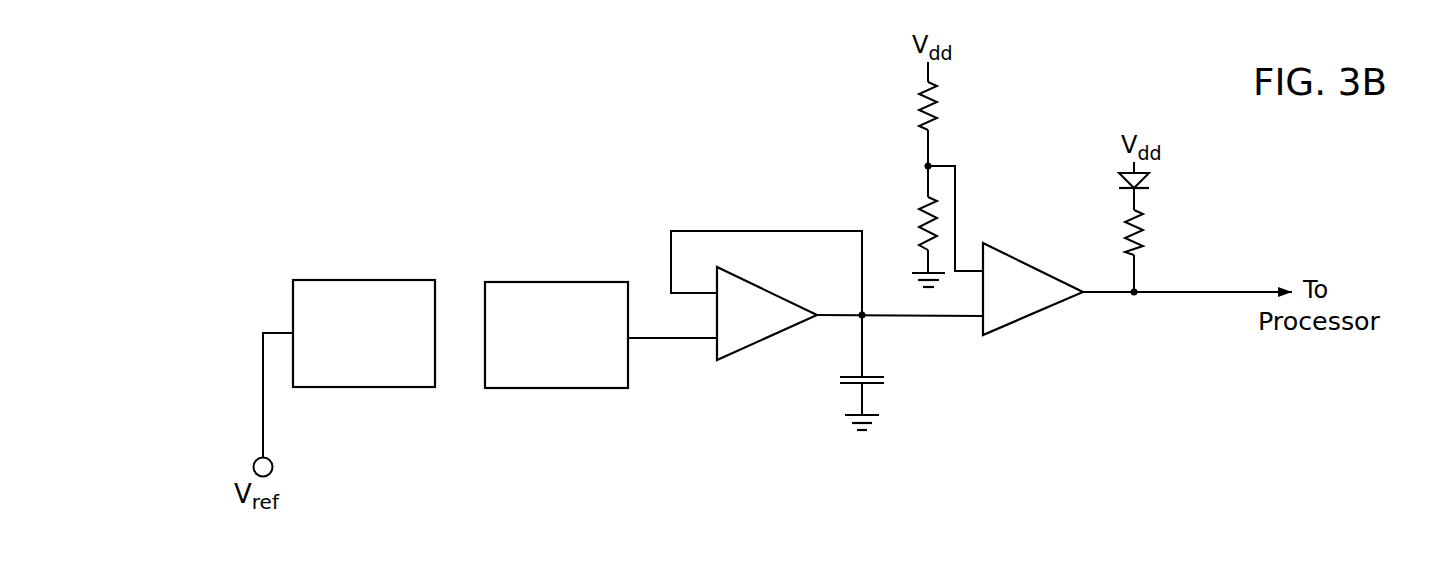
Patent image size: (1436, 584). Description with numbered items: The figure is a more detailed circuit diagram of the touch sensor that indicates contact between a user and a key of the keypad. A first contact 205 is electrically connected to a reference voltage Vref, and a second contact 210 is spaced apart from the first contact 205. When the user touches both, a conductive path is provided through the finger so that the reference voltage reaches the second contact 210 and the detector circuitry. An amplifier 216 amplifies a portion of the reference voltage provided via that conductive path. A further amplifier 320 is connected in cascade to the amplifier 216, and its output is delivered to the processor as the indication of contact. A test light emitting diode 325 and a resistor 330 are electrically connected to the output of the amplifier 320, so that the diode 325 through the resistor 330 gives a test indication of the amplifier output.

The first contact 205 is at (427, 262).
The second contact 210 is at (617, 260).
The amplifier 216 is at (770, 339).
The amplifier 320 is at (1033, 315).
The test light emitting diode 325 is at (1158, 182).
The resistor 330 is at (1169, 251).